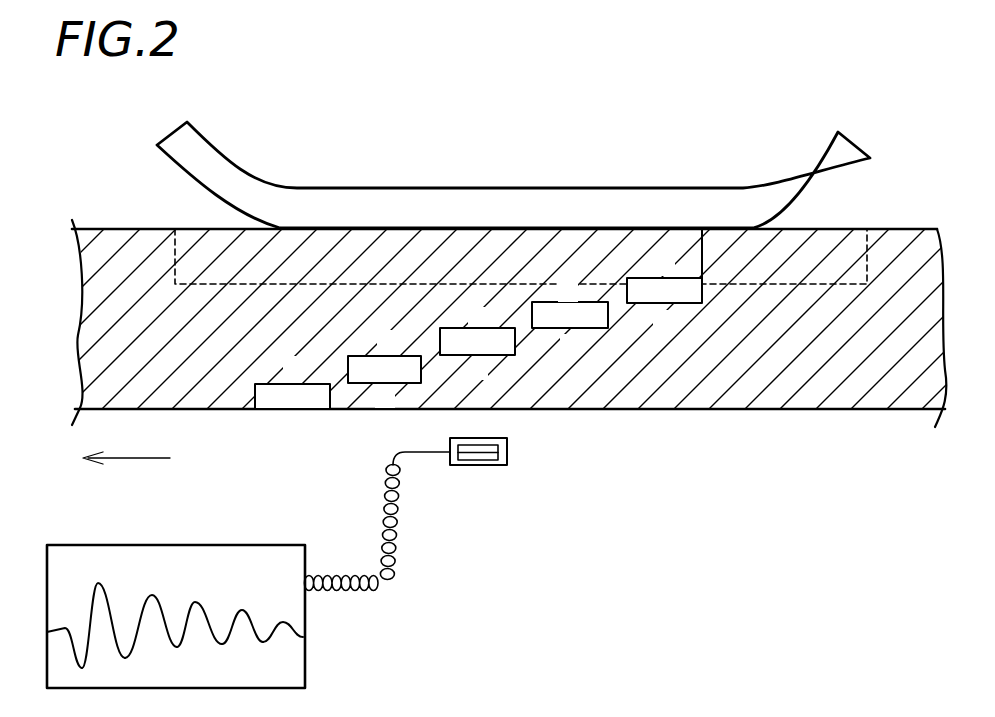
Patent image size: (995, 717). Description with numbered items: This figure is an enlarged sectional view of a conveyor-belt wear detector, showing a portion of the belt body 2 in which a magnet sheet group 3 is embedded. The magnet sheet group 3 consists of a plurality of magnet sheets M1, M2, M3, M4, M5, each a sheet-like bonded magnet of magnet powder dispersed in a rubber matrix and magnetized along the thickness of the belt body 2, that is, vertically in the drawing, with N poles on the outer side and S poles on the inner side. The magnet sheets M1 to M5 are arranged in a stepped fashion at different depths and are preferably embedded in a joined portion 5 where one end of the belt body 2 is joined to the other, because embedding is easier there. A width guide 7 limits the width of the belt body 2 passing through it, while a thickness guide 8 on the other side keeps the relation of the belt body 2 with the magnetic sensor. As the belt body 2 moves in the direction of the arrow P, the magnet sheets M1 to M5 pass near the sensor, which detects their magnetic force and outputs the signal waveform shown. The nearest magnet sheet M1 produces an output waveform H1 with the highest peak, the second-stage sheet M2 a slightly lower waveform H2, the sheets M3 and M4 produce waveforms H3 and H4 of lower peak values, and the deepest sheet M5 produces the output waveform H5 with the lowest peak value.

The belt body 2 is at (117, 229).
The magnet sheet group 3 is at (485, 357).
The joined portion 5 is at (703, 229).
The width guide 7 is at (867, 268).
The thickness guide 8 is at (516, 187).
The magnet sheet M1 is at (256, 404).
The magnet sheet M2 is at (357, 384).
The magnet sheet M3 is at (517, 342).
The magnet sheet M4 is at (608, 325).
The magnet sheet M5 is at (703, 304).
The arrow P is at (130, 460).
The output waveform H1 is at (103, 609).
The output waveform H2 is at (151, 611).
The output waveform H3 is at (199, 607).
The output waveform H4 is at (242, 611).
The output waveform H5 is at (283, 617).